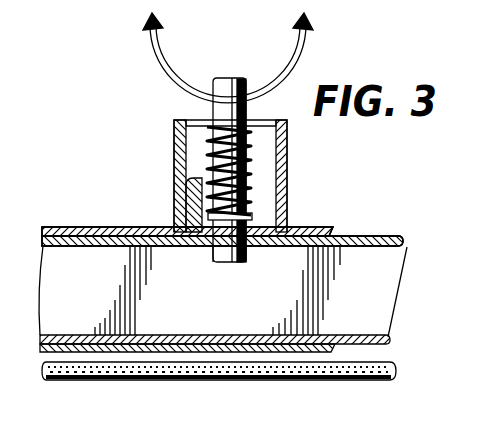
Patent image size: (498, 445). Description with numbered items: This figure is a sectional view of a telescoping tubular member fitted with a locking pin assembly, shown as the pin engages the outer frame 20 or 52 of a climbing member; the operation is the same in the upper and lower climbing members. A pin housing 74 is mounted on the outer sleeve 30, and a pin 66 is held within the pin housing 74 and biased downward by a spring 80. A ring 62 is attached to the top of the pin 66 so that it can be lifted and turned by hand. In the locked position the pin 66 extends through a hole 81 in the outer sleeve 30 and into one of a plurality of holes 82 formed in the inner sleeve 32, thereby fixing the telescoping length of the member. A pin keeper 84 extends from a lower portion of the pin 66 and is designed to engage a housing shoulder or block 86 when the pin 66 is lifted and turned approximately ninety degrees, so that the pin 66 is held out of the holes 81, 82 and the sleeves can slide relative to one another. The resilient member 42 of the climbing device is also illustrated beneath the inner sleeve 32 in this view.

The outer frame 20 is at (110, 200).
The outer frame 52 is at (222, 241).
The outer sleeve 30 is at (136, 226).
The inner sleeve 32 is at (402, 254).
The resilient member 42 is at (395, 374).
The ring 62 is at (288, 68).
The pin 66 is at (231, 77).
The pin housing 74 is at (229, 160).
The spring 80 is at (205, 122).
The hole 81 is at (287, 200).
The holes 82 is at (78, 240).
The pin keeper 84 is at (216, 248).
The housing shoulder or block 86 is at (190, 178).